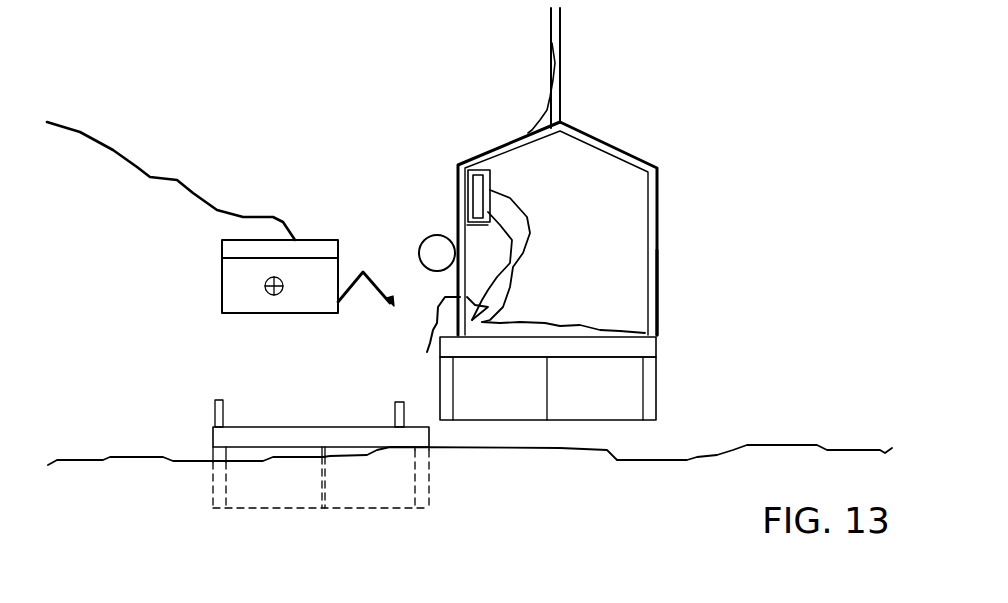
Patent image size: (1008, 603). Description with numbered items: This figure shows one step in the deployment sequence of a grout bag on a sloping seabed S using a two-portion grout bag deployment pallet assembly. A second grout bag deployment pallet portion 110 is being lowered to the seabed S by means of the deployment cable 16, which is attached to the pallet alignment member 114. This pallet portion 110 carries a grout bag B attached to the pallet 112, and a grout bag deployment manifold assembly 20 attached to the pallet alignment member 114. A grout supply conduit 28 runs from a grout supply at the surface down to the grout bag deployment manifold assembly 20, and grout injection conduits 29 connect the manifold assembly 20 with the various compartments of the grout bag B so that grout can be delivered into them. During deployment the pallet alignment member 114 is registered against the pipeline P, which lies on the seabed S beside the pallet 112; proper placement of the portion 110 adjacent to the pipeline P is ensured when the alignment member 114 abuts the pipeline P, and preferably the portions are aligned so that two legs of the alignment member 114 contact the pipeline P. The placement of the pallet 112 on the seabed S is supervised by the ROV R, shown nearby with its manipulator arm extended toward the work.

The deployment cable 16 is at (562, 75).
The grout supply conduit 28 is at (550, 45).
The grout bag deployment manifold assembly 20 is at (472, 193).
The grout injection conduits 29 is at (513, 273).
The grout bag deployment pallet portion 110 is at (657, 232).
The pallet alignment member 114 is at (652, 298).
The pallet 112 is at (652, 352).
The ROV R is at (326, 238).
The pipeline P is at (415, 248).
The grout bag B is at (425, 340).
The seabed S is at (772, 443).